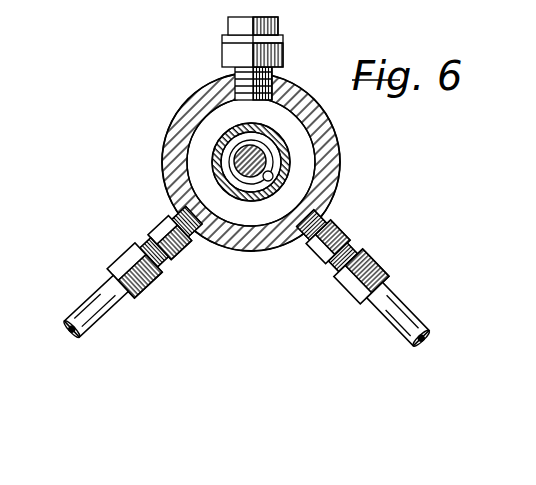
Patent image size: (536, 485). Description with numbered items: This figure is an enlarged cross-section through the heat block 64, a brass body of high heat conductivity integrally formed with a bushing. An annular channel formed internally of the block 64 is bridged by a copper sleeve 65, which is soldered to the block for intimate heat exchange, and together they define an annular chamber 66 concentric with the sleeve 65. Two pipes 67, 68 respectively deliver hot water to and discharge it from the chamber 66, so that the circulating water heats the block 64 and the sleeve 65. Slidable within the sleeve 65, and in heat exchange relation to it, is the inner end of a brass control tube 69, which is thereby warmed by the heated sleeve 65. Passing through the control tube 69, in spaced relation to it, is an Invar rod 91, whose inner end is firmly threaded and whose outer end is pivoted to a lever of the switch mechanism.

The heat block 64 is at (400, 99).
The copper sleeve 65 is at (268, 163).
The annular chamber 66 is at (295, 142).
The pipe 67 is at (433, 293).
The pipe 68 is at (110, 317).
The control tube 69 is at (273, 184).
The Invar rod 91 is at (222, 151).